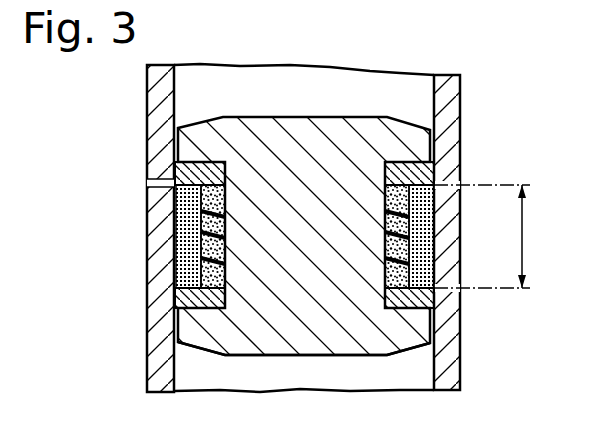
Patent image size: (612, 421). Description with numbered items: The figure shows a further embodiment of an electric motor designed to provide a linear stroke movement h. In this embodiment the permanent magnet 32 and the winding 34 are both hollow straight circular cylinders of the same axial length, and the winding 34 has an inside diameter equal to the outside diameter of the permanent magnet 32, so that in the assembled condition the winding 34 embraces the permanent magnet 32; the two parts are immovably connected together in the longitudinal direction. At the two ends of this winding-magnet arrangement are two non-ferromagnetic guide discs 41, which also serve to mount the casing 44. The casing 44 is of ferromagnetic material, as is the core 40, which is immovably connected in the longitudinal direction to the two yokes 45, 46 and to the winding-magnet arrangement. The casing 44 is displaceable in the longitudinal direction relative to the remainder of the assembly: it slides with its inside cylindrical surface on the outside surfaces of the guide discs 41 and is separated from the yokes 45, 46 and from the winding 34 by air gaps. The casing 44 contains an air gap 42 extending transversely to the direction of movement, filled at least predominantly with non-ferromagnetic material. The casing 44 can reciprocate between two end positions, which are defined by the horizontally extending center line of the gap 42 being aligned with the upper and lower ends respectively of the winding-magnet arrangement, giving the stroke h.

The permanent magnet 32 is at (181, 223).
The winding 34 is at (206, 268).
The core 40 is at (352, 230).
The guide discs 41 is at (436, 165).
The air gap 42 is at (160, 183).
The casing 44 is at (163, 335).
The yoke 45 is at (372, 128).
The yoke 46 is at (387, 333).
The stroke movement h is at (523, 240).